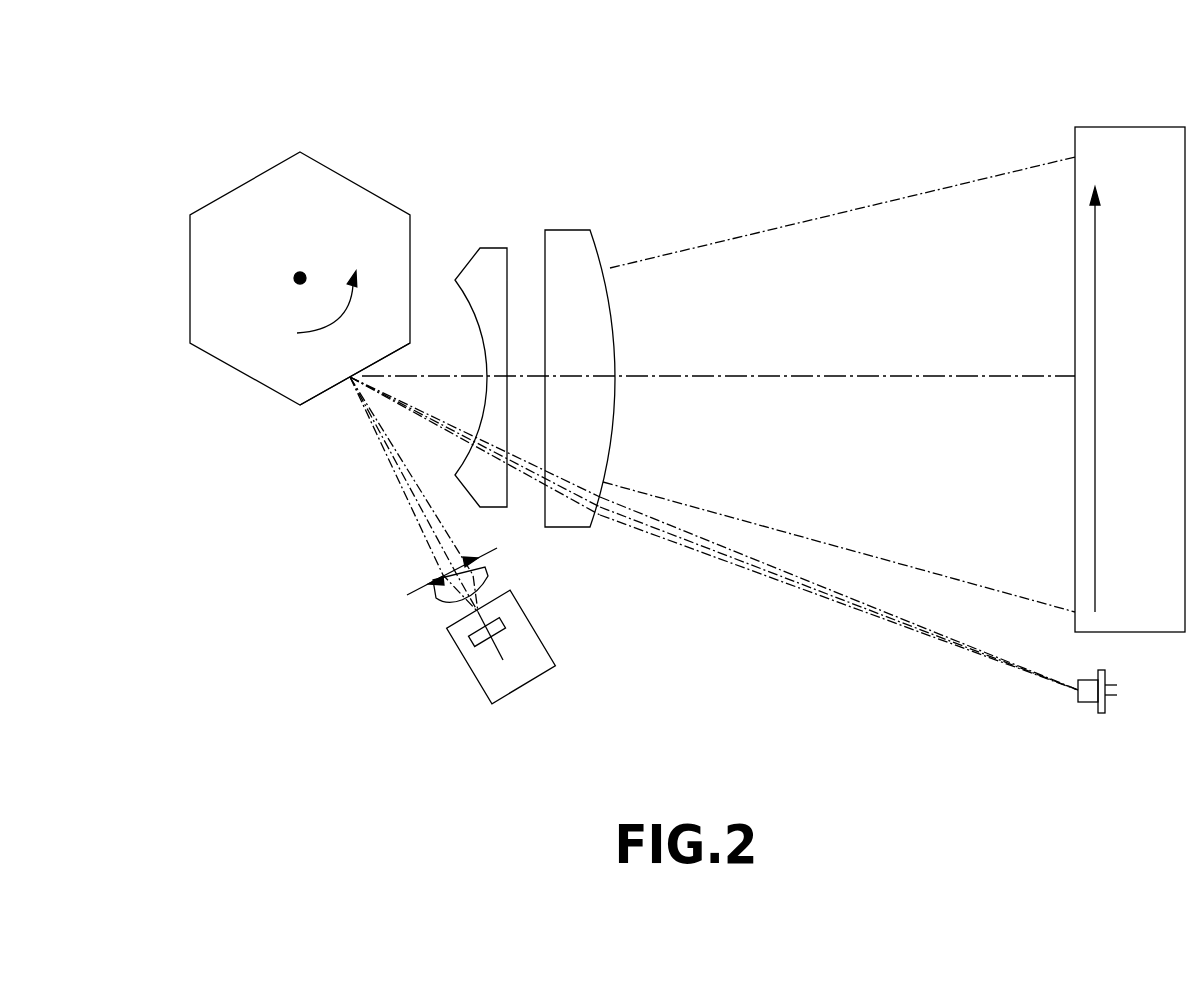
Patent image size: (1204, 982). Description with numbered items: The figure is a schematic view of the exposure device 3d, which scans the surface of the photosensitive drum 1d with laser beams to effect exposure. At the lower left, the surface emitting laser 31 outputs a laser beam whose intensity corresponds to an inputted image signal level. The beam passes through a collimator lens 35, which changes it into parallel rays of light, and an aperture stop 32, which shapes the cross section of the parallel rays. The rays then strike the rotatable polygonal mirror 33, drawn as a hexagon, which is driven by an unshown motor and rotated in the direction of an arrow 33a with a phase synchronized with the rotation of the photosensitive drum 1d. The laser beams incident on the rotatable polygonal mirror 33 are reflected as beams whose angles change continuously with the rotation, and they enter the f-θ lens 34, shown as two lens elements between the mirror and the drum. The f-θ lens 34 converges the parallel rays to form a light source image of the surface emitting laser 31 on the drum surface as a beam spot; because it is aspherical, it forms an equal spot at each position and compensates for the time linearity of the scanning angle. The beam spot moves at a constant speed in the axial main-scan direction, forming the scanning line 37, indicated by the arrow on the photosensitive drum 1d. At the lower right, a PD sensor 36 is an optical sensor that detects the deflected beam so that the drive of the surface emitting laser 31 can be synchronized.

The photosensitive drum 1d is at (1153, 126).
The exposure device 3d is at (533, 110).
The surface emitting laser 31 is at (504, 633).
The aperture stop 32 is at (484, 556).
The rotatable polygonal mirror 33 is at (357, 180).
The arrow 33a is at (324, 332).
The f-θ lens 34 is at (607, 213).
The collimator lens 35 is at (445, 603).
The PD sensor 36 is at (1092, 703).
The scanning line 37 is at (1095, 318).